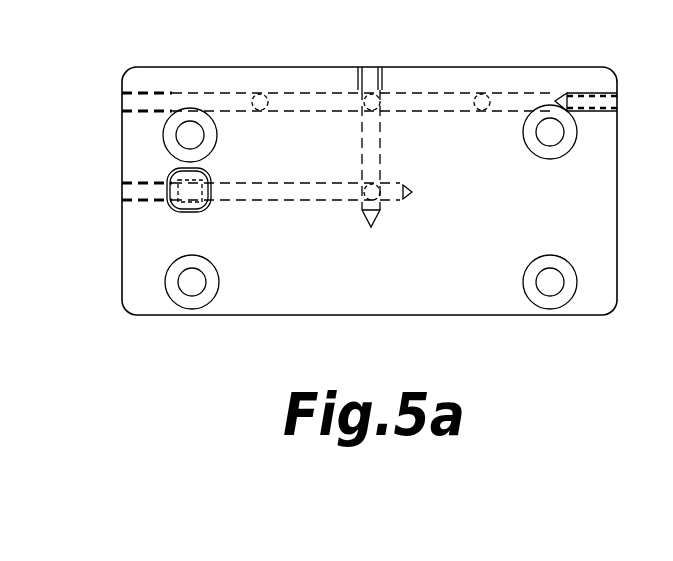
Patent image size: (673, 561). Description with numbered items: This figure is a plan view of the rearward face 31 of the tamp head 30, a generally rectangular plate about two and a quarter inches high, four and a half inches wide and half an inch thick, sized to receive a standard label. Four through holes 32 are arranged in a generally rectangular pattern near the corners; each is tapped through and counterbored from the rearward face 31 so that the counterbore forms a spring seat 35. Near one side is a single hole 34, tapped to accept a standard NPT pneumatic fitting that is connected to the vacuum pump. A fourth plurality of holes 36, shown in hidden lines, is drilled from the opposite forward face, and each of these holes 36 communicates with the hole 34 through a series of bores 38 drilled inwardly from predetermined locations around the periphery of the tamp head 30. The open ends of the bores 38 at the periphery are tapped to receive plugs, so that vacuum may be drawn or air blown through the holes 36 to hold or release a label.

The tamp head 30 is at (578, 342).
The rearward face 31 is at (507, 225).
The third plurality of through holes 32 is at (550, 137).
The single hole 34 is at (190, 203).
The spring seat 35 is at (185, 132).
The fourth plurality of holes 36 is at (478, 96).
The bores 38 is at (230, 104).